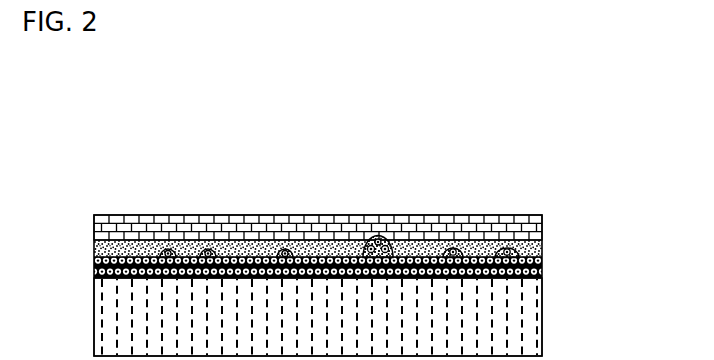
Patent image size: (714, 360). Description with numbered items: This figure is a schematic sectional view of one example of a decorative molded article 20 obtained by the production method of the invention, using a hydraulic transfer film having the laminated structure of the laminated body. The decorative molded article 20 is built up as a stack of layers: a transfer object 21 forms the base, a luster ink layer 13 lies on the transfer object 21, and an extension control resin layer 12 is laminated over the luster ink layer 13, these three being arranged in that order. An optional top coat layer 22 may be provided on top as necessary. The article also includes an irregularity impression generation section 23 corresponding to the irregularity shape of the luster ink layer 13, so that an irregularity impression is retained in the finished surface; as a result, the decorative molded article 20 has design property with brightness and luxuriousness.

The decorative molded article 20 is at (520, 71).
The top coat layer 22 is at (543, 216).
The extension control resin layer 12 is at (543, 247).
The luster ink layer 13 is at (543, 272).
The irregularity impression generation section 23 is at (378, 246).
The transfer object 21 is at (543, 320).